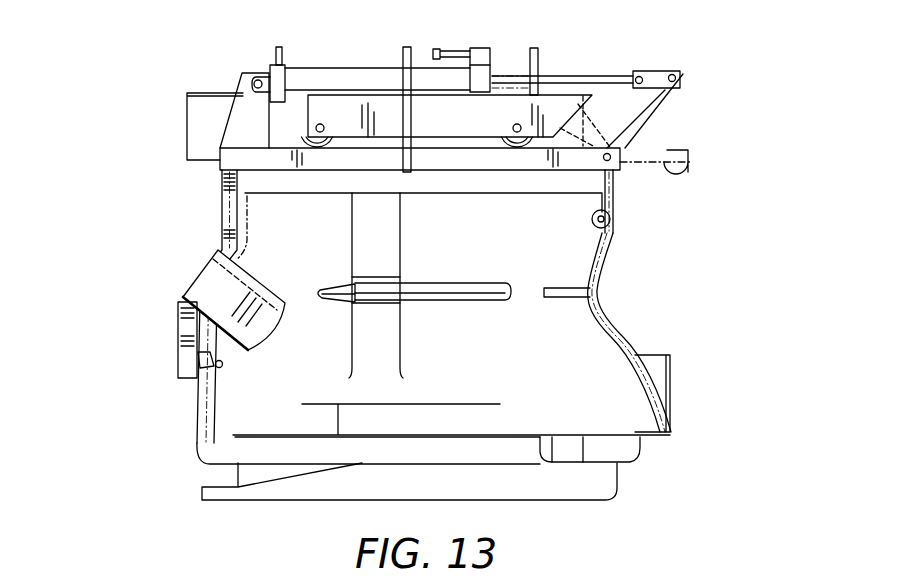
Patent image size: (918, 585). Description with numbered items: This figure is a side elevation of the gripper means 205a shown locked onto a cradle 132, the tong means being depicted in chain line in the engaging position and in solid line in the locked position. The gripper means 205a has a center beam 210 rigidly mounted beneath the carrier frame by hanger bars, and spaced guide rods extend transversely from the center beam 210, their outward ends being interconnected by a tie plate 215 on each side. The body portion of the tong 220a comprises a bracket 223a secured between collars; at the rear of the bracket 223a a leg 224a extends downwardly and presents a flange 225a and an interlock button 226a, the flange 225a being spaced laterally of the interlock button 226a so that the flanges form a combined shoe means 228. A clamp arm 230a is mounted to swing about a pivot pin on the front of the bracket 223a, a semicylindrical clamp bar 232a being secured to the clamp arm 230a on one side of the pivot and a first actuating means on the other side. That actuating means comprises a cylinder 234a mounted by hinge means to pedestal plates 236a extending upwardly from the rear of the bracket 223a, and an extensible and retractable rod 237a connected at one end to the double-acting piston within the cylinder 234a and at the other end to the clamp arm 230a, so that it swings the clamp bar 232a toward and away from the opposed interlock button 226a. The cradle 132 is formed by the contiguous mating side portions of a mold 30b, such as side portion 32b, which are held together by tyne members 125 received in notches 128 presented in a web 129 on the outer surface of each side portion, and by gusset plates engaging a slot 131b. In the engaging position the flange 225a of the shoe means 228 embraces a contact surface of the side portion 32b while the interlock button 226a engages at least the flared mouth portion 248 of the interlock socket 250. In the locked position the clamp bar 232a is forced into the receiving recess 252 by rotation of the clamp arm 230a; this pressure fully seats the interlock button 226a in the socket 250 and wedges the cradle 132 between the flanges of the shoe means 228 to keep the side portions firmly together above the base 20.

The base plate 20 is at (536, 505).
The mold 30b is at (200, 441).
The side portion 32b is at (517, 366).
The tyne member 125 is at (431, 291).
The notch 128 is at (345, 290).
The web 129 is at (377, 250).
The slot 131b is at (596, 291).
The cradle 132 is at (600, 411).
The gripper means 205a is at (303, 36).
The center beam 210 is at (197, 118).
The tie plate 215 is at (459, 124).
The tong 220a is at (215, 179).
The bracket 223a is at (287, 165).
The leg 224a is at (227, 217).
The flange 225a is at (191, 297).
The interlock button 226a is at (197, 352).
The shoe means 228 is at (196, 266).
The clamp arm 230a is at (612, 185).
The clamp bar 232a is at (610, 222).
The cylinder 234a is at (347, 76).
The pedestal plate 236a is at (248, 96).
The rod 237a is at (577, 78).
The flared mouth portion 248 is at (191, 383).
The interlock socket 250 is at (223, 369).
The receiving recess 252 is at (594, 219).